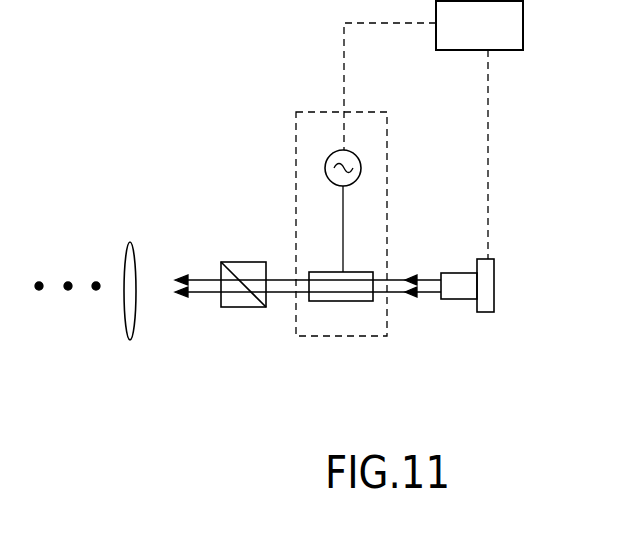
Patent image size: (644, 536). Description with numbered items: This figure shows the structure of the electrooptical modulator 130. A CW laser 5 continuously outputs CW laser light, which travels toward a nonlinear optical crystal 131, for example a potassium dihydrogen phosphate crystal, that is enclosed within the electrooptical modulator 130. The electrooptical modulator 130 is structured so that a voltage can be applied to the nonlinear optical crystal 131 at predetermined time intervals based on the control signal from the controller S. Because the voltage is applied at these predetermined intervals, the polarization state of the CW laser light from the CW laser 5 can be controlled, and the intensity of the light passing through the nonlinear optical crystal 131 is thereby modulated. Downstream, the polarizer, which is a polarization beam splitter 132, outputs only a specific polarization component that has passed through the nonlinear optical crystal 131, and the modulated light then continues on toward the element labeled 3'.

The controller S is at (523, 23).
The electrooptical modulator 130 is at (387, 186).
The nonlinear optical crystal 131 is at (343, 301).
The polarizer (polarization beam splitter) 132 is at (243, 307).
The CW laser 5 is at (494, 288).
The lens 3' is at (95, 319).